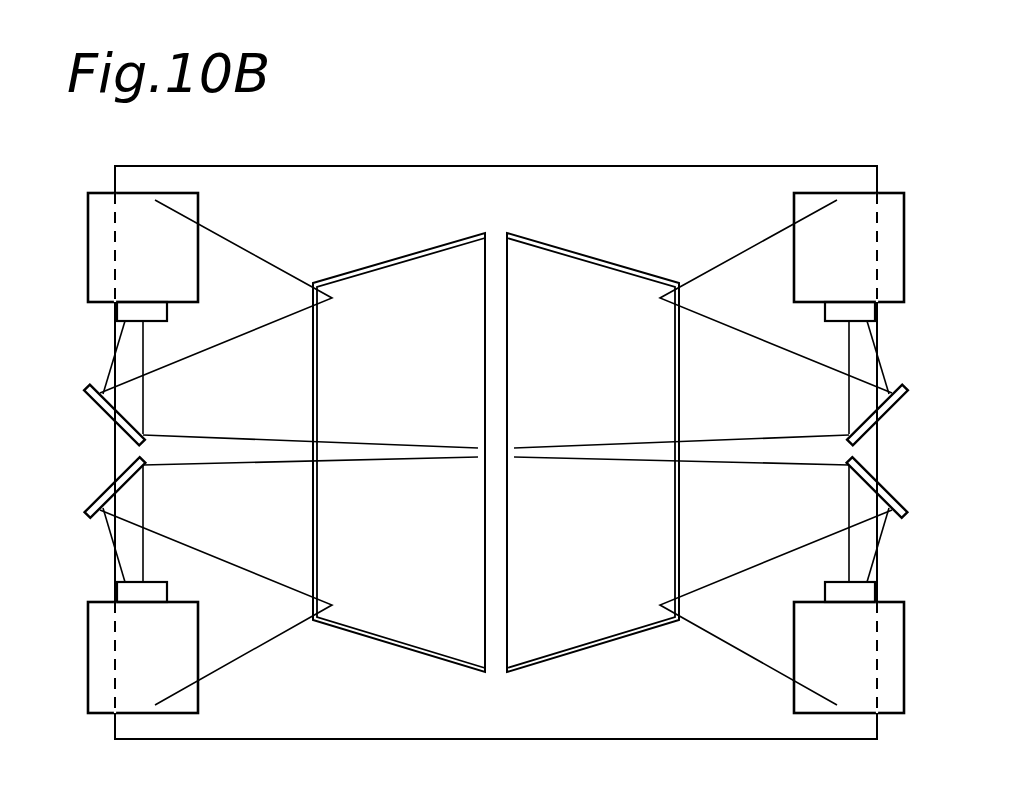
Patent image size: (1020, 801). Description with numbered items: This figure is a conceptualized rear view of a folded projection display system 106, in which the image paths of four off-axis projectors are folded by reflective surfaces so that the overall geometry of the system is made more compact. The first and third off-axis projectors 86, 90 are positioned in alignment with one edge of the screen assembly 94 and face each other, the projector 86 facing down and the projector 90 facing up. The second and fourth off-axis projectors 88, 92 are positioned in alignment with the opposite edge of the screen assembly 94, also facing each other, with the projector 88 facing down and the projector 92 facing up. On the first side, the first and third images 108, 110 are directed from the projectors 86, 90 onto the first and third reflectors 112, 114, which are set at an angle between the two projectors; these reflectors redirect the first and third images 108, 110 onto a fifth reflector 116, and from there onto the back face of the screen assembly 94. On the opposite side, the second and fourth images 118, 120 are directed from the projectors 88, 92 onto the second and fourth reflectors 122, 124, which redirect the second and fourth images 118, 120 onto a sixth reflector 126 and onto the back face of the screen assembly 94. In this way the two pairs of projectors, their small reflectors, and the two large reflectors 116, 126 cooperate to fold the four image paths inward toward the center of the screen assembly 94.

The first off-axis projector 86 is at (158, 266).
The second off-axis projector 88 is at (863, 266).
The third off-axis projector 90 is at (158, 671).
The fourth off-axis projector 92 is at (868, 671).
The screen assembly 94 is at (648, 213).
The folded projection display system 106 is at (462, 110).
The first image 108 is at (288, 383).
The third image 110 is at (279, 532).
The first reflector 112 is at (118, 441).
The third reflector 114 is at (118, 463).
The fifth reflector 116 is at (435, 350).
The second image 118 is at (763, 377).
The fourth image 120 is at (758, 534).
The second reflector 122 is at (868, 441).
The fourth reflector 124 is at (868, 463).
The sixth reflector 126 is at (635, 365).